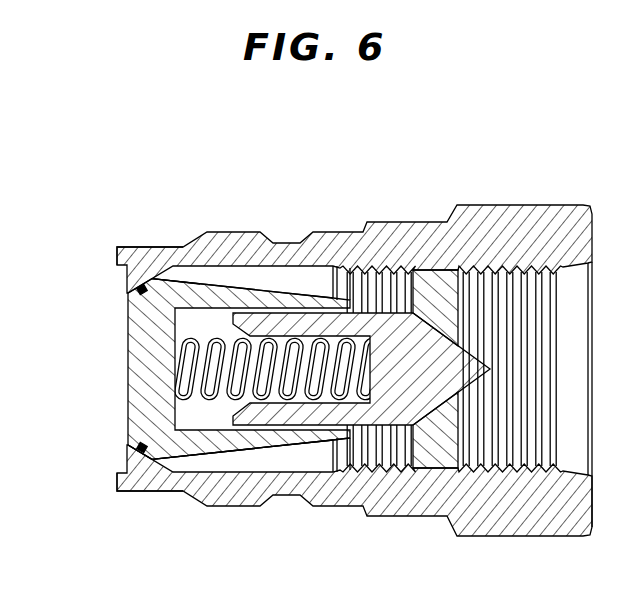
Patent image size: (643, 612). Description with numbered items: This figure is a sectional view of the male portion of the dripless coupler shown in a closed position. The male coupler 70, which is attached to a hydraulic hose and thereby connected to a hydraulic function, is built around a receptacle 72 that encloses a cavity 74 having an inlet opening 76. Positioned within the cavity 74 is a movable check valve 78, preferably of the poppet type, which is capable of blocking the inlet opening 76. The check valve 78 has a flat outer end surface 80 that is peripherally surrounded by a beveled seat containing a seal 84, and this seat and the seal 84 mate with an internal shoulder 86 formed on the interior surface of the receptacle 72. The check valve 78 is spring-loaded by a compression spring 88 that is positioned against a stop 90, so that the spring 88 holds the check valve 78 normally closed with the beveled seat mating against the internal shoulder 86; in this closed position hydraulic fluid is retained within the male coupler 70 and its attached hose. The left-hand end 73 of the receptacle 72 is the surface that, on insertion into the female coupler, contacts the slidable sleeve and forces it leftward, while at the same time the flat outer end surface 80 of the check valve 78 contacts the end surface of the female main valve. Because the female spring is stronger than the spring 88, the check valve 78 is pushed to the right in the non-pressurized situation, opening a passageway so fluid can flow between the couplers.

The male coupler 70 is at (558, 166).
The receptacle 72 is at (385, 221).
The left-hand end 73 is at (116, 250).
The cavity 74 is at (314, 291).
The inlet opening 76 is at (128, 295).
The check valve 78 is at (129, 352).
The flat outer end surface 80 is at (128, 403).
The seal 84 is at (147, 451).
The internal shoulder 86 is at (177, 284).
The compression spring 88 is at (222, 401).
The stop 90 is at (448, 386).